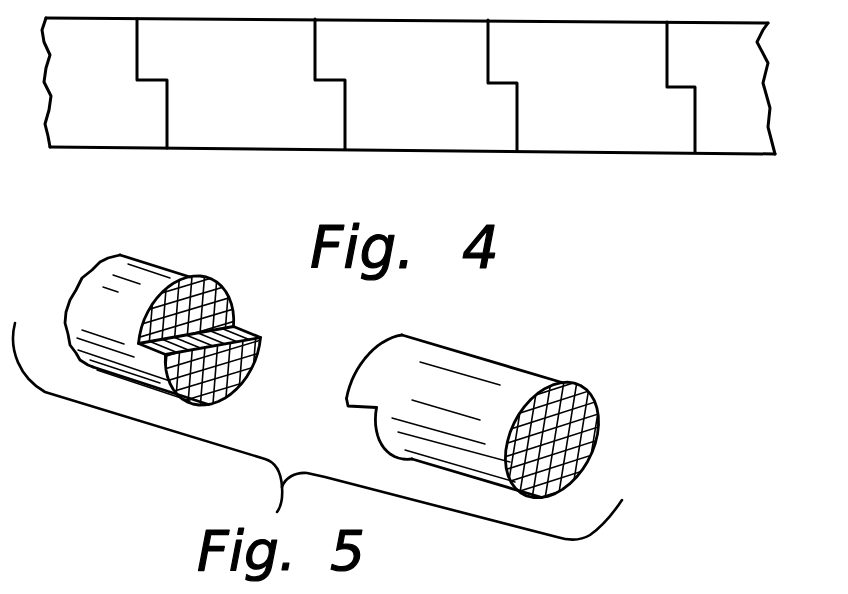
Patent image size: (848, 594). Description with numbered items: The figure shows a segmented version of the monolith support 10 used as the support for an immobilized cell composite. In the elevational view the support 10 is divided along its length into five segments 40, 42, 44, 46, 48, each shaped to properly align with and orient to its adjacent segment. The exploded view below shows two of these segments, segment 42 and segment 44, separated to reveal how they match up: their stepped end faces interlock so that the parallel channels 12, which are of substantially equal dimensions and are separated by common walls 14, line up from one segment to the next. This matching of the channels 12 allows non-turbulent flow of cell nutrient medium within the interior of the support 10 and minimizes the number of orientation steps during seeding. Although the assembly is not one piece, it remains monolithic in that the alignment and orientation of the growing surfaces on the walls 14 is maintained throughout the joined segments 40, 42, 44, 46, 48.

In FIG. 4, the monolith support 10 is at (408, 112).
In FIG. 5, the monolith support 10 is at (364, 378).
In FIG. 5, the parallel channels 12 is at (572, 410).
In FIG. 5, the common walls 14 is at (575, 462).
In FIG. 4, the segment 40 is at (113, 98).
In FIG. 4, the segment 42 is at (262, 98).
In FIG. 5, the segment 42 is at (124, 322).
In FIG. 4, the segment 44 is at (437, 100).
In FIG. 5, the segment 44 is at (505, 430).
In FIG. 4, the segment 46 is at (614, 102).
In FIG. 4, the segment 48 is at (750, 104).